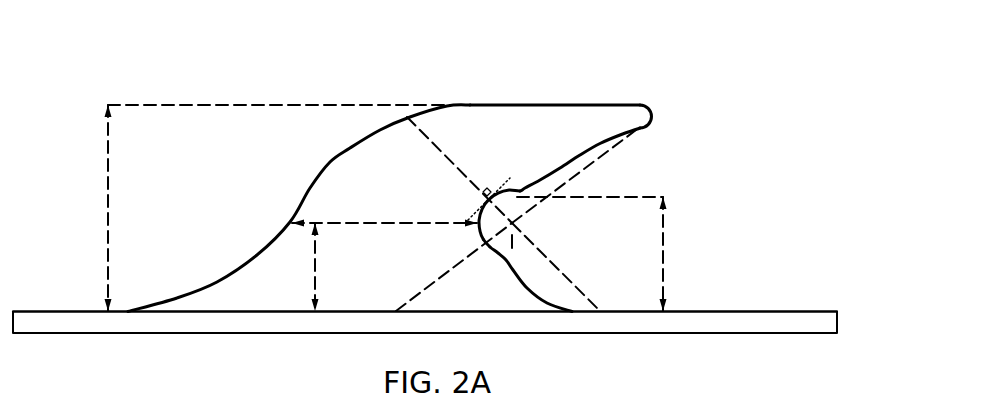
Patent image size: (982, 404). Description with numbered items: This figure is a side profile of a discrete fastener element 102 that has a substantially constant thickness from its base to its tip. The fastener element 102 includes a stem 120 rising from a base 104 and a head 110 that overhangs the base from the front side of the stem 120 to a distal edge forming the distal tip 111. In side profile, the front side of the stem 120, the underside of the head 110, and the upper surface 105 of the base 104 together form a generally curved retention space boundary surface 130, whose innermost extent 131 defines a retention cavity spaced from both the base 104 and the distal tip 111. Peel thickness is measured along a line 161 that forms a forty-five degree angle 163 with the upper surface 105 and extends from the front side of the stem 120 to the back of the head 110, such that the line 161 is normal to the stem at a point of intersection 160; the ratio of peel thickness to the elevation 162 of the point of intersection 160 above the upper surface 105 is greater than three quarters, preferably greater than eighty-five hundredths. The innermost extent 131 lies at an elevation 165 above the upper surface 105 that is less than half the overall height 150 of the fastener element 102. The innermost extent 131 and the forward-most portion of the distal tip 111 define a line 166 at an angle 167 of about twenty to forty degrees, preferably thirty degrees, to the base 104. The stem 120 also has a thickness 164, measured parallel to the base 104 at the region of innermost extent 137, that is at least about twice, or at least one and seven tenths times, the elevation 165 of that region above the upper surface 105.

The fastener element 102 is at (662, 50).
The base 104 is at (715, 325).
The upper surface of base 105 is at (716, 312).
The head 110 is at (542, 124).
The distal tip 111 is at (652, 121).
The stem 120 is at (330, 195).
The retention space boundary surface 130 is at (525, 290).
The innermost extent of boundary surface 131 is at (518, 224).
The region of innermost extent 137 is at (482, 232).
The overall height 150 is at (110, 202).
The point of intersection 160 is at (478, 196).
The line 161 is at (437, 158).
The elevation of point of intersection 162 is at (667, 233).
The angle 163 is at (575, 293).
The stem thickness 164 is at (363, 223).
The elevation of innermost extent 165 is at (316, 263).
The line 166 is at (600, 155).
The angle 167 is at (434, 294).